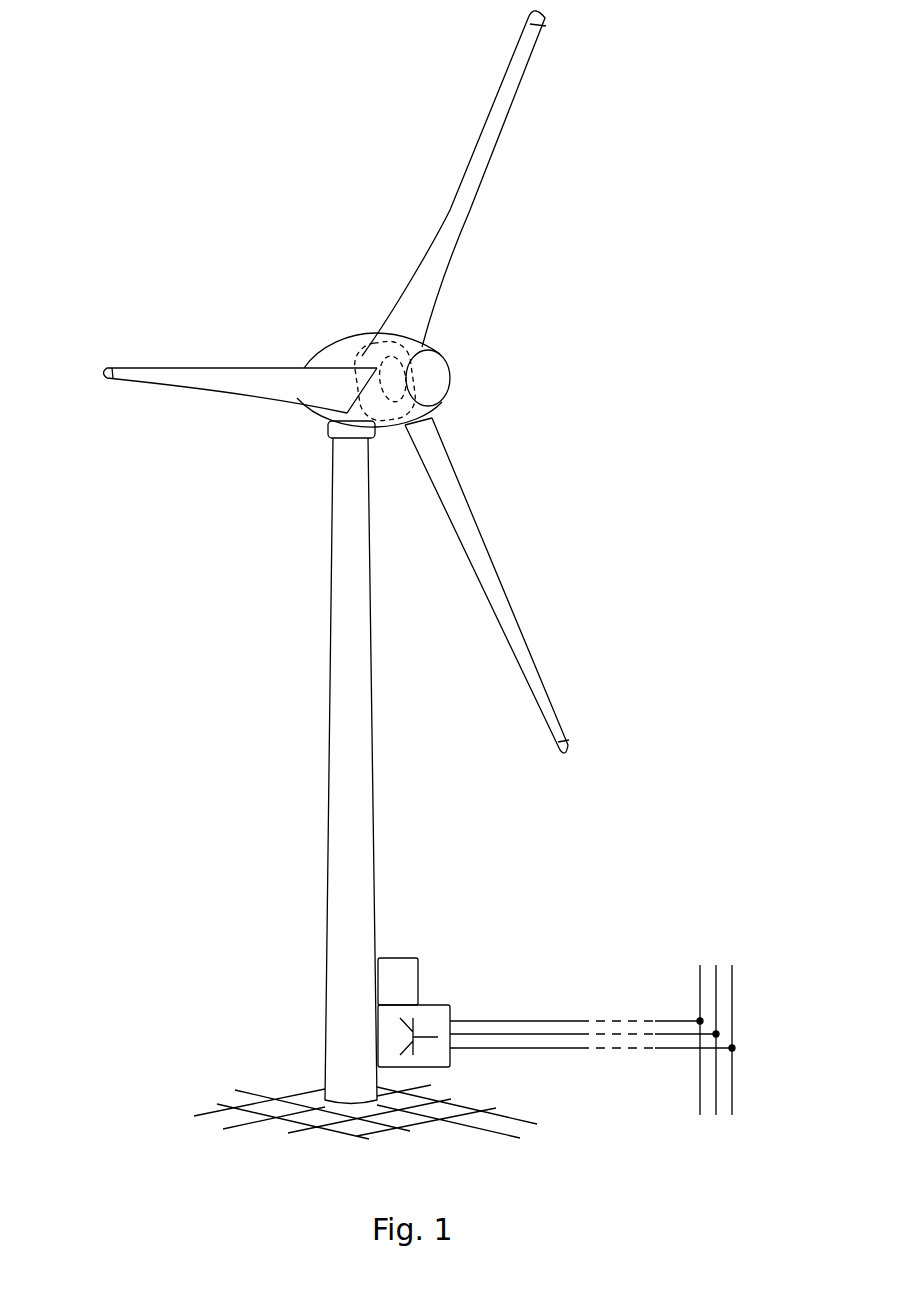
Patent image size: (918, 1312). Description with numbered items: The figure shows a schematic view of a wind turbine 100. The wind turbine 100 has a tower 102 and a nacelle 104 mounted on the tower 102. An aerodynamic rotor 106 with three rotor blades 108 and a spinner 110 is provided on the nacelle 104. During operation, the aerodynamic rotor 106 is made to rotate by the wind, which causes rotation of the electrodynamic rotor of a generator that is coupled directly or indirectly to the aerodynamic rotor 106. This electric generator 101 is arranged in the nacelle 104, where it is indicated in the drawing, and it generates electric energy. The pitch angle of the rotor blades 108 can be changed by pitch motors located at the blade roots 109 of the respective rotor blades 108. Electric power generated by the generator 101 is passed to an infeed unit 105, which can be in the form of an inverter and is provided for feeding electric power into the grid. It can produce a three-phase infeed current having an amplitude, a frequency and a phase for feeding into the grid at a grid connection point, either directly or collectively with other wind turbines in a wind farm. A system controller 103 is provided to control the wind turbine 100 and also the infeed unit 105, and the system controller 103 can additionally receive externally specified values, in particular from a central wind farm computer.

The wind turbine 100 is at (284, 513).
The electric generator 101 is at (388, 358).
The tower 102 is at (362, 845).
The system controller 103 is at (420, 978).
The nacelle 104 is at (347, 353).
The infeed unit 105 is at (453, 1057).
The aerodynamic rotor 106 is at (521, 297).
The rotor blade 108 is at (485, 140).
The blade root 109 is at (434, 413).
The spinner 110 is at (433, 378).